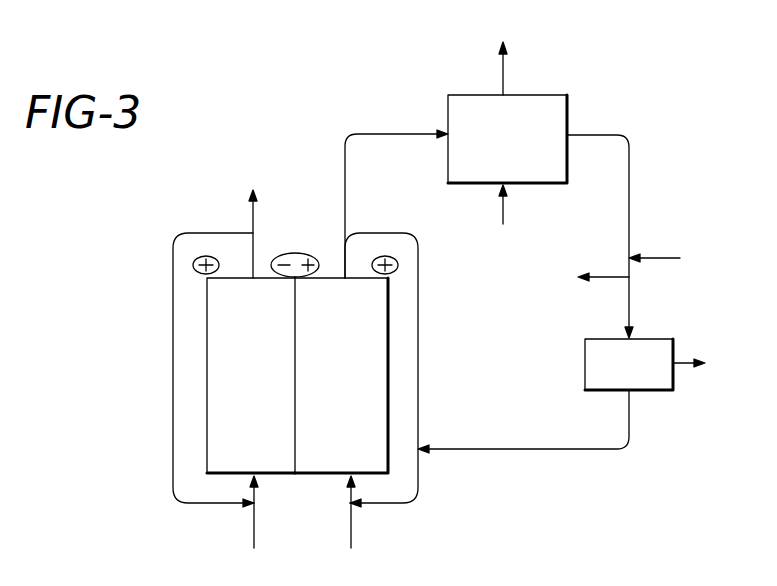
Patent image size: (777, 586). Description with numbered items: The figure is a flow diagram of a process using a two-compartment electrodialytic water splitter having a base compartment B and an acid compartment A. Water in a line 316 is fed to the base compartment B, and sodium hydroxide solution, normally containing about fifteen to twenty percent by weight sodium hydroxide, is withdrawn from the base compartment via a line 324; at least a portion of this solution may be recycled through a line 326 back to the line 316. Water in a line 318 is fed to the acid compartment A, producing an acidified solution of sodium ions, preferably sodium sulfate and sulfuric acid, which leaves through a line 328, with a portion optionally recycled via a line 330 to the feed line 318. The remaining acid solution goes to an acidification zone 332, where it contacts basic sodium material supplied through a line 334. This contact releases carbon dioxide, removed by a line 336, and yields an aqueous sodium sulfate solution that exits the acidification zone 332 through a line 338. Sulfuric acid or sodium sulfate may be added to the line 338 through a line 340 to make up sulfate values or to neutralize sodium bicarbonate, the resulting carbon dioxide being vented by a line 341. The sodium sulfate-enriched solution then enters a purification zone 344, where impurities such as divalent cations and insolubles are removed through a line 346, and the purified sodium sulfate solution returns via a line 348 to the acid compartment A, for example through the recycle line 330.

The line 316 is at (254, 525).
The line 318 is at (351, 527).
The line 324 is at (253, 212).
The line 326 is at (173, 415).
The line 328 is at (345, 203).
The line 330 is at (418, 388).
The acidification zone 332 is at (448, 112).
The line 334 is at (503, 212).
The line 336 is at (503, 66).
The line 338 is at (629, 206).
The line 340 is at (650, 260).
The line 341 is at (612, 278).
The purification zone 344 is at (585, 362).
The line 346 is at (689, 364).
The line 348 is at (583, 449).